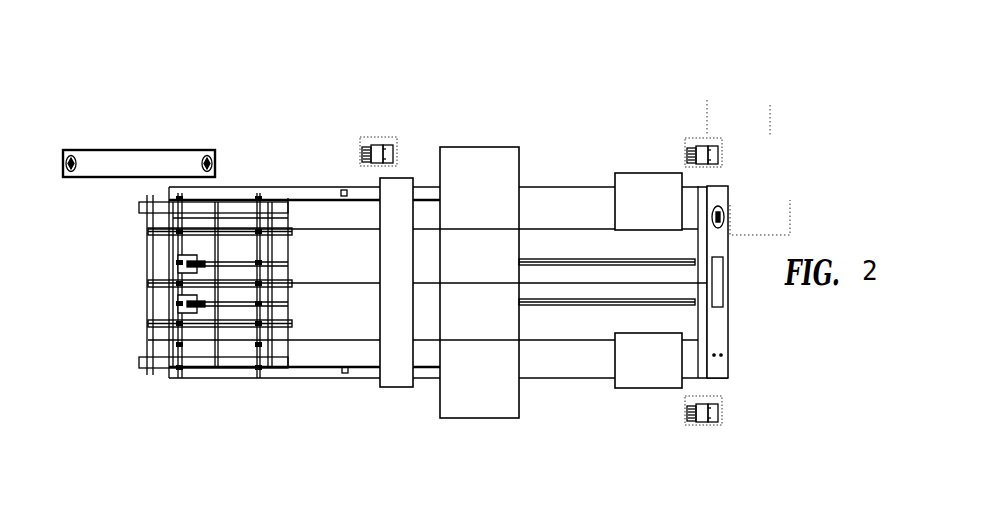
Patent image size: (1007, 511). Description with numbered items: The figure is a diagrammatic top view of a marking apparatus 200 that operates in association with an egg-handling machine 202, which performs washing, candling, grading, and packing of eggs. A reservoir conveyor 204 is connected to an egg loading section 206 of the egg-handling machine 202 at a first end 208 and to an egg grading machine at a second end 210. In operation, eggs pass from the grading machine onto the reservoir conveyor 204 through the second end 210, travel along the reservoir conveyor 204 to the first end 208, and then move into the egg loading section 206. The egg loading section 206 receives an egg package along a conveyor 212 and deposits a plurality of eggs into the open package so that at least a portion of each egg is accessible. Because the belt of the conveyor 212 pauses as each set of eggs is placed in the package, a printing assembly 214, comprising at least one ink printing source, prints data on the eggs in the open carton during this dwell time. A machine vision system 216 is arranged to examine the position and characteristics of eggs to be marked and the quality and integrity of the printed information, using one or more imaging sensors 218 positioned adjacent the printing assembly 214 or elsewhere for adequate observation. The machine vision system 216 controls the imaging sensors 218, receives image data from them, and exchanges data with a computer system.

The marking apparatus 200 is at (448, 215).
The egg-handling machine 202 is at (593, 180).
The reservoir conveyor 204 is at (188, 332).
The egg loading section 206 is at (468, 147).
The first end 208 is at (290, 257).
The second end 210 is at (155, 255).
The conveyor 212 is at (570, 320).
The printing assembly 214 is at (392, 350).
The machine vision system 216 is at (738, 230).
The imaging sensors 218 is at (368, 168).